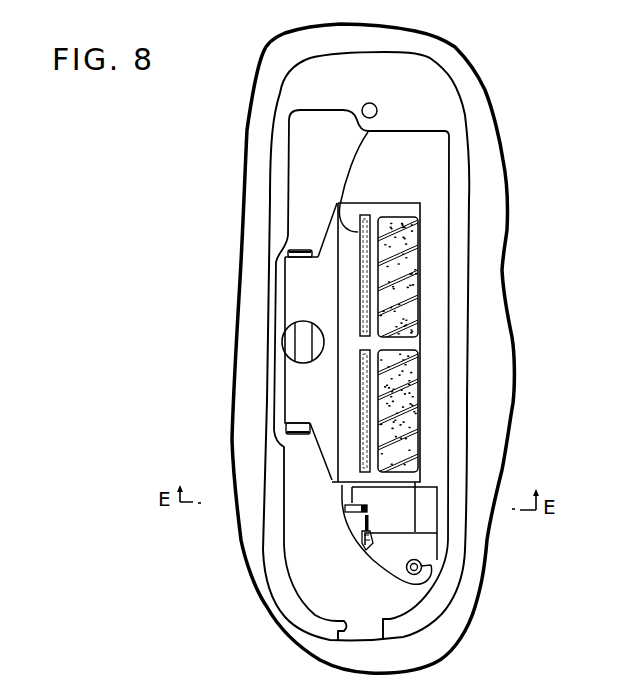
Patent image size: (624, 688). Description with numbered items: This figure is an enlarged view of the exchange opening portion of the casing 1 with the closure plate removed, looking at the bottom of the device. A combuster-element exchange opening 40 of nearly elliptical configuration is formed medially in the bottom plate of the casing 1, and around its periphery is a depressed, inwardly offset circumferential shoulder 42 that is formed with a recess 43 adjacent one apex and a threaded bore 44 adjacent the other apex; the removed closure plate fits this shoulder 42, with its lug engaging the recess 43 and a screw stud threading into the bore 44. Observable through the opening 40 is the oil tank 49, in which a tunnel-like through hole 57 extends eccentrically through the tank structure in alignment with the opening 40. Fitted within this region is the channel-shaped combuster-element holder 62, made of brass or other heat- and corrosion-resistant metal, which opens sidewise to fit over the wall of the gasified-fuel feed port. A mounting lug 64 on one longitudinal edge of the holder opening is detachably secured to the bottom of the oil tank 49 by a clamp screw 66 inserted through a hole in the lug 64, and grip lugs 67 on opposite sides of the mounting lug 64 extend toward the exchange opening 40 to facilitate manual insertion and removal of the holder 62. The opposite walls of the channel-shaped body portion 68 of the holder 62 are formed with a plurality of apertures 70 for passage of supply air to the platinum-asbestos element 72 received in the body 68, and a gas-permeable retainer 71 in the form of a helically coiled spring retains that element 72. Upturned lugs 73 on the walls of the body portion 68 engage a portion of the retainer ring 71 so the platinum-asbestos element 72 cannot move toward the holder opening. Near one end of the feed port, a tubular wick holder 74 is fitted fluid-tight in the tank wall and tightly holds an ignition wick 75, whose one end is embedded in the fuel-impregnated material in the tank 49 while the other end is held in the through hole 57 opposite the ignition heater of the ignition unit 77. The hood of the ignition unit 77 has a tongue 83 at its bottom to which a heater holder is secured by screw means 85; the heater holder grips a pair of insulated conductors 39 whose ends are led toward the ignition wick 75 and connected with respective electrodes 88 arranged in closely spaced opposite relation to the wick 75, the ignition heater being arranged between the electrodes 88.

The casing 1 is at (250, 137).
The insulated conductor 39 is at (364, 553).
The combuster-element exchange opening 40 is at (446, 448).
The circumferential shoulder 42 is at (466, 184).
The recess 43 is at (332, 629).
The threaded bore 44 is at (370, 102).
The oil tank 49 is at (290, 182).
The through hole 57 is at (358, 158).
The combuster-element holder 62 is at (348, 287).
The mounting lug 64 is at (290, 403).
The clamp screw 66 is at (285, 343).
The grip lug 67 is at (301, 250).
The channel-shaped body portion 68 is at (400, 203).
The aperture 70 is at (405, 334).
The gas-permeable retainer 71 is at (400, 258).
The platinum-asbestos element 72 is at (405, 297).
The upturned lug 73 is at (338, 201).
The tubular wick holder 74 is at (345, 508).
The ignition wick 75 is at (363, 524).
The ignition unit 77 is at (378, 567).
The tongue 83 is at (442, 547).
The screw means 85 is at (460, 581).
The electrode 88 is at (365, 532).